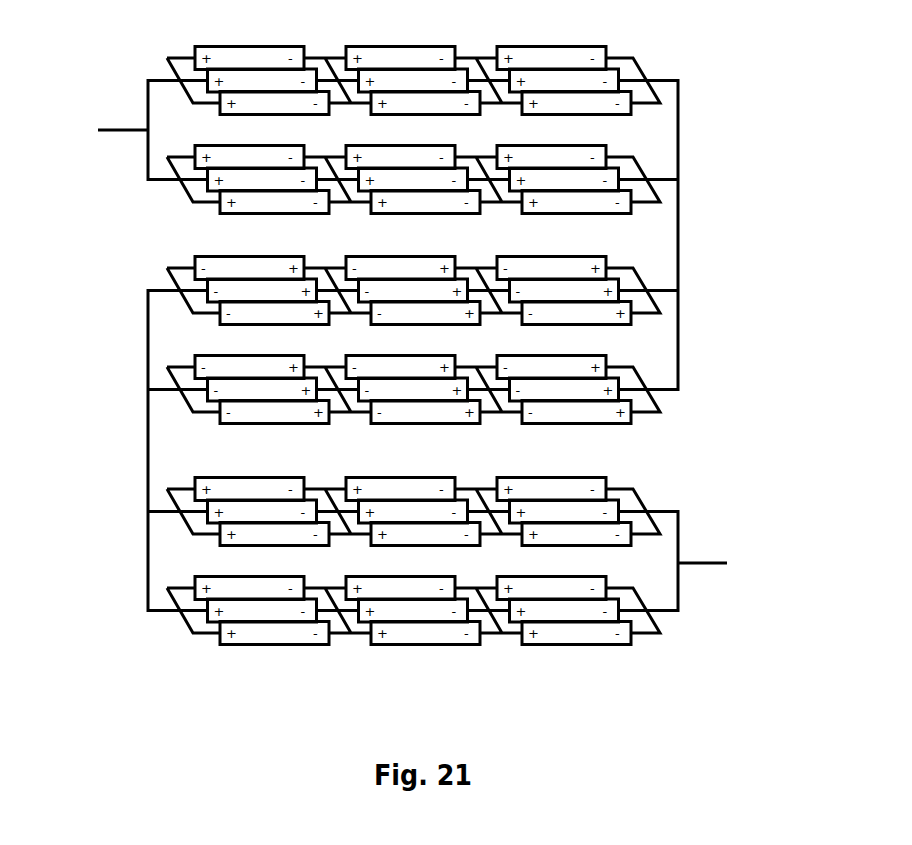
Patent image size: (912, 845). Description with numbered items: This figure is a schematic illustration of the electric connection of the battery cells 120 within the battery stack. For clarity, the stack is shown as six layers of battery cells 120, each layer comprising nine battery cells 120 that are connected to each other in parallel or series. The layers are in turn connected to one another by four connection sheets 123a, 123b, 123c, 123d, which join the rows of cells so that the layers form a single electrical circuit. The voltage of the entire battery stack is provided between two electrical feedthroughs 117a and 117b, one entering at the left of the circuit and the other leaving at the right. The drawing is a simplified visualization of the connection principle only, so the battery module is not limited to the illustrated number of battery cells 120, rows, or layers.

The battery cell 120 is at (577, 632).
The connection sheet 123a is at (137, 92).
The connection sheet 123b is at (135, 453).
The connection sheet 123c is at (690, 235).
The connection sheet 123d is at (690, 527).
The electrical feedthrough 117a is at (107, 122).
The electrical feedthrough 117b is at (710, 570).